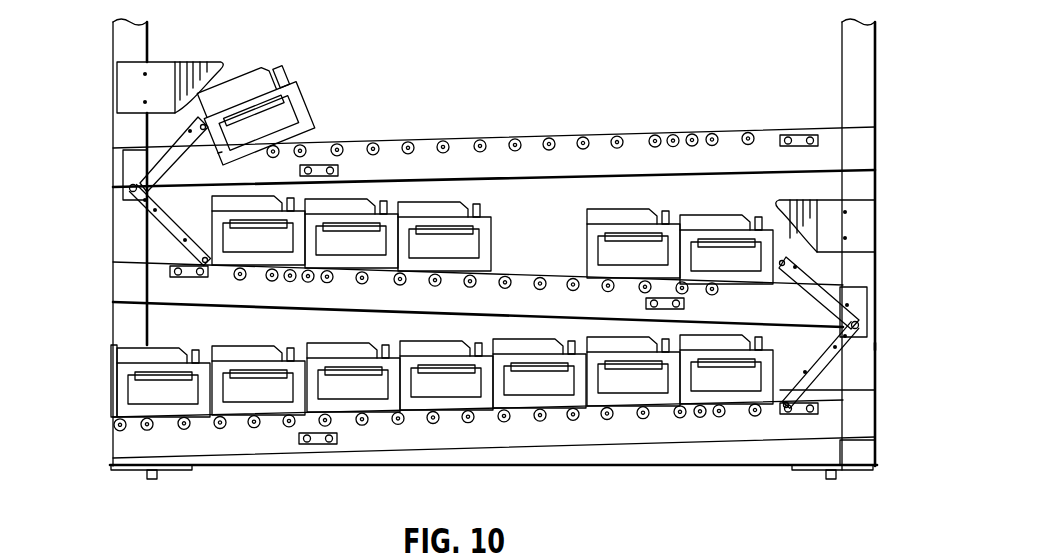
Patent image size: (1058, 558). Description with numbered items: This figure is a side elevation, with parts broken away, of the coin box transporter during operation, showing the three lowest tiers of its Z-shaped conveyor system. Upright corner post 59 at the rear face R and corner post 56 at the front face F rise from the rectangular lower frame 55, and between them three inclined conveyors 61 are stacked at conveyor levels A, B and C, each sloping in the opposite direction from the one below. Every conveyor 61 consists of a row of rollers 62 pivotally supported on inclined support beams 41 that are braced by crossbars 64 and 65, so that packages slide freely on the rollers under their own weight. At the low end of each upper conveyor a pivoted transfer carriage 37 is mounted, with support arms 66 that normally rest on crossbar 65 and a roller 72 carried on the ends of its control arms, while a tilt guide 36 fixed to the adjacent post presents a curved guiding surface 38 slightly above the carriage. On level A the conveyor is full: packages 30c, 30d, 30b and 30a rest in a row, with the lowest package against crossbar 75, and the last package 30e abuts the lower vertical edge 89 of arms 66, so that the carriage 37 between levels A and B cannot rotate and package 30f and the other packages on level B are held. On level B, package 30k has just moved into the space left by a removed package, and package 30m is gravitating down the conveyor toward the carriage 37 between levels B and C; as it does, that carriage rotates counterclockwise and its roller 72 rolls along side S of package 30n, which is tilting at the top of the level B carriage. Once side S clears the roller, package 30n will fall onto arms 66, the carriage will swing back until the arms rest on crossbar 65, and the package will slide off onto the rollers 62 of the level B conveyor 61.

The corner post 59 is at (118, 42).
The corner post 56 is at (853, 42).
The tilt guide 36 is at (162, 90).
The curved guiding surface 38 is at (783, 205).
The transfer carriage 37 is at (175, 128).
The support arm 66 is at (157, 222).
The crossbar 65 is at (172, 272).
The crossbar 64 is at (320, 166).
The roller 72 is at (782, 272).
The support beam 41 is at (862, 146).
The roller 62 is at (690, 135).
The conveyor 61 is at (543, 173).
The lower frame 55 is at (622, 456).
The crossbar 75 is at (112, 370).
The lower vertical edge 89 is at (780, 404).
The coin box package 30n is at (268, 82).
The coin box package 30m is at (258, 227).
The coin box package 30k is at (444, 233).
The coin box package 30f is at (726, 246).
The coin box package 30c is at (163, 379).
The coin box package 30d is at (258, 377).
The coin box package 30b is at (353, 374).
The coin box package 30a is at (446, 372).
The coin box package 30e is at (726, 366).
The conveyor level C is at (473, 135).
The conveyor level B is at (514, 263).
The conveyor level A is at (454, 434).
The rear face R is at (113, 187).
The side of package S is at (218, 153).
The front face F is at (876, 347).